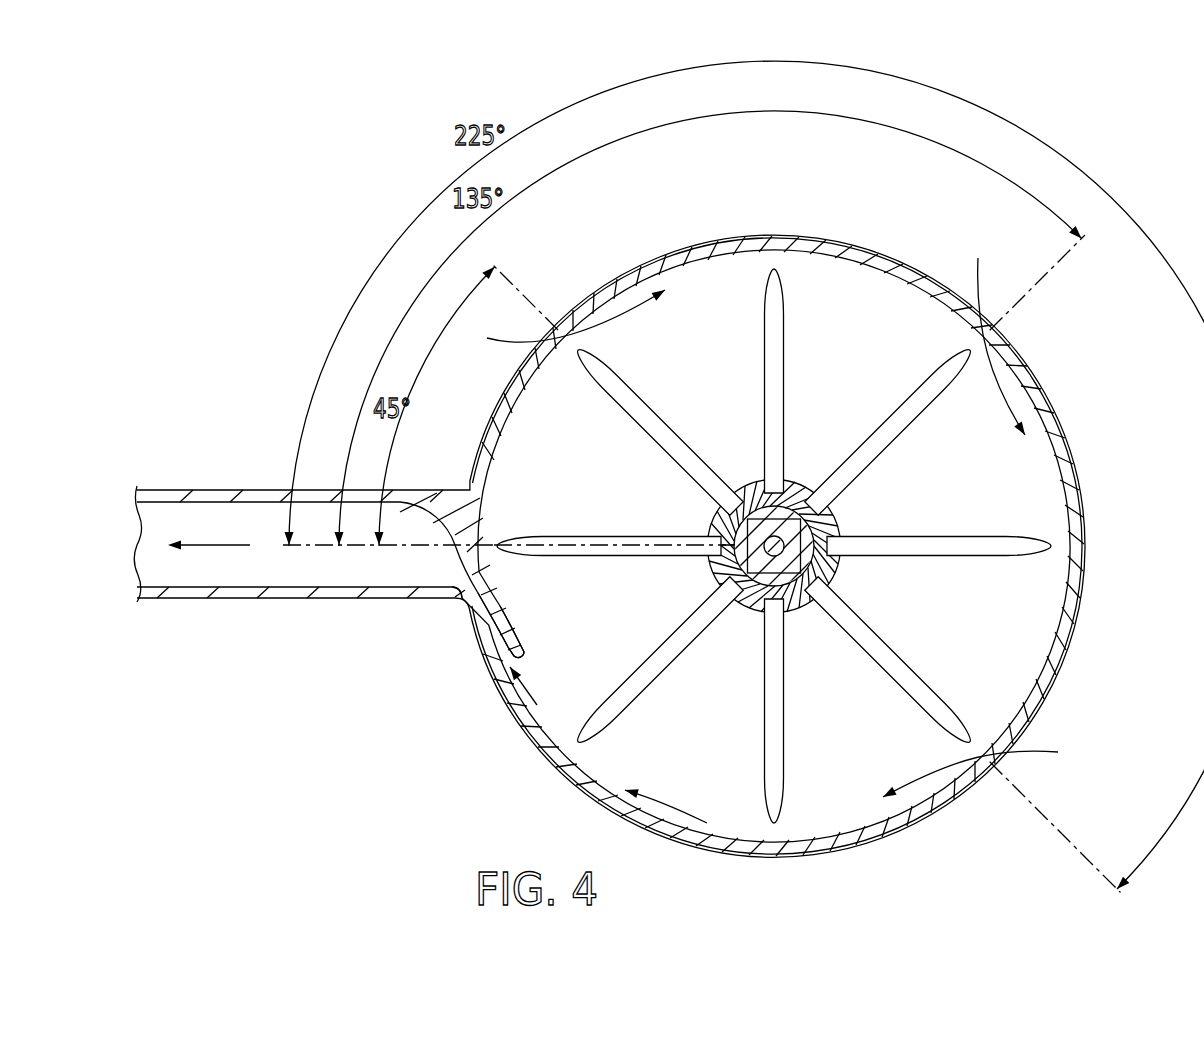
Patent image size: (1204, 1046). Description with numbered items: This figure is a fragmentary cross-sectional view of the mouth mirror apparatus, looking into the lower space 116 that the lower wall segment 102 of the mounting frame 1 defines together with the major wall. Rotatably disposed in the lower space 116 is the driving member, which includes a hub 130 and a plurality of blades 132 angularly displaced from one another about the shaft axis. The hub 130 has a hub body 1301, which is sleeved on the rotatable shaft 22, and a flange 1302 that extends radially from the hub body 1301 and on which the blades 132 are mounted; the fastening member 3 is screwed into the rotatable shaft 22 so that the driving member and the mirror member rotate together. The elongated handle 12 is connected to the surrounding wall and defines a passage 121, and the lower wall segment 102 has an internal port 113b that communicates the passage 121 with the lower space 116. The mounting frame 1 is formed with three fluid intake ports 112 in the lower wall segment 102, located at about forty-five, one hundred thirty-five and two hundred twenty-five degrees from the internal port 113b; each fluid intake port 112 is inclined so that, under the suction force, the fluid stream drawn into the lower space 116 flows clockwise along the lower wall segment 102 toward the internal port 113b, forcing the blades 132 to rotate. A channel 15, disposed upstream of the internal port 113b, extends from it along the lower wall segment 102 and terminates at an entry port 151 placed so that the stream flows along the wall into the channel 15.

The mounting frame 1 is at (950, 846).
The lower wall segment 102 is at (550, 752).
The lower space 116 is at (832, 780).
The fluid intake port 112 is at (537, 352).
The elongated handle 12 is at (227, 490).
The passage 121 is at (297, 567).
The internal port 113b is at (462, 568).
The channel 15 is at (500, 639).
The entry port 151 is at (500, 648).
The hub 130 is at (677, 525).
The hub body 1301 is at (731, 511).
The flange 1302 is at (720, 531).
The rotatable shaft 22 is at (763, 559).
The fastening member 3 is at (784, 551).
The blade 132 is at (643, 393).